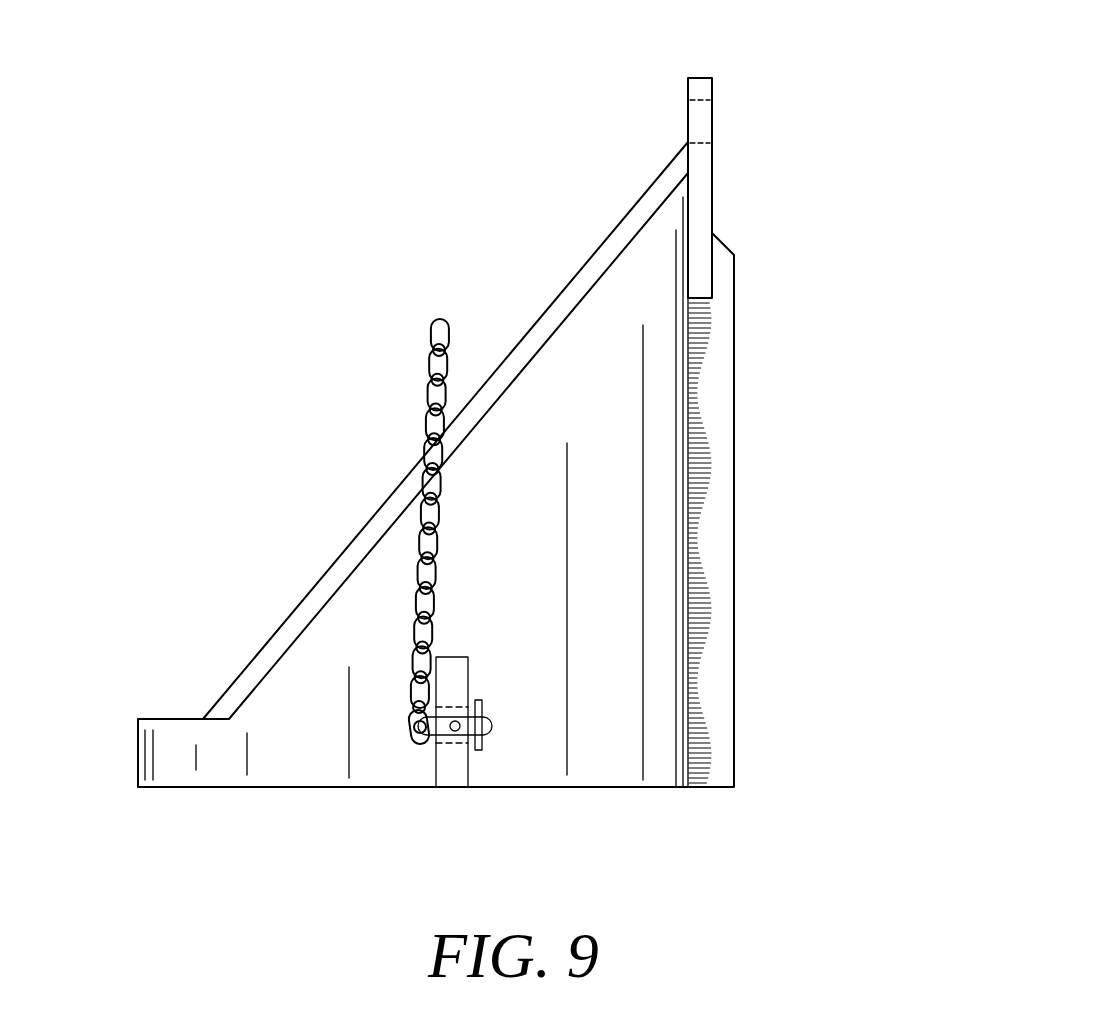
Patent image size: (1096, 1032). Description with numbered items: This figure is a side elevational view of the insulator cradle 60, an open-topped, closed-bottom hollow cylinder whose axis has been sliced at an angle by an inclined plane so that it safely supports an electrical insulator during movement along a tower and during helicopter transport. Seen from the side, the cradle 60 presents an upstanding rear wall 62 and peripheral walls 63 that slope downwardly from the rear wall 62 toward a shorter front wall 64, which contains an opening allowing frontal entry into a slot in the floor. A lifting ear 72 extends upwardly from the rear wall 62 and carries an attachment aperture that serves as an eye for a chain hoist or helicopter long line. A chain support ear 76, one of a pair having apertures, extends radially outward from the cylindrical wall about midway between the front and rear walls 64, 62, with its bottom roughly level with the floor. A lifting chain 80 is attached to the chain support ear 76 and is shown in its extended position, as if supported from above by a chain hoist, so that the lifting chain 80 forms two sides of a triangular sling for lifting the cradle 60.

The insulator cradle 60 is at (826, 320).
The rear wall 62 is at (687, 582).
The peripheral walls 63 is at (595, 733).
The front wall 64 is at (138, 752).
The lifting ear 72 is at (697, 75).
The chain support ear 76 is at (458, 677).
The lifting chain 80 is at (425, 395).